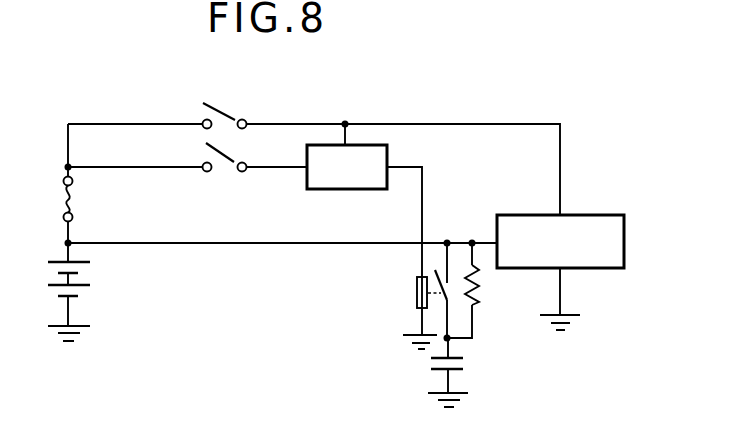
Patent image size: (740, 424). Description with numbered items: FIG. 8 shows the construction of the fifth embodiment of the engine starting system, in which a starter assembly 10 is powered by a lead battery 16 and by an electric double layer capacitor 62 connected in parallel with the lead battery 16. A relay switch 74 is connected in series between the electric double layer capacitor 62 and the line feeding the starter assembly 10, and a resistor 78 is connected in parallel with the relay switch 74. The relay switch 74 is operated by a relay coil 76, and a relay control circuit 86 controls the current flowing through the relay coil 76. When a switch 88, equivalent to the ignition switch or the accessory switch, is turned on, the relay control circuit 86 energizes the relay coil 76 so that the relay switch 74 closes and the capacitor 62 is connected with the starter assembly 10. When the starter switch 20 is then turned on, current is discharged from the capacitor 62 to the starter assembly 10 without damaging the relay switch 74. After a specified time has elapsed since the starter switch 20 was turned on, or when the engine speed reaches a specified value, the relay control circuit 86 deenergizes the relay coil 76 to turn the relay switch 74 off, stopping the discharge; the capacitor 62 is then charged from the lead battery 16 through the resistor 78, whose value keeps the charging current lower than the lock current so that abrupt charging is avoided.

The starter assembly 10 is at (592, 220).
The lead battery 16 is at (80, 280).
The starter switch 20 is at (223, 110).
The electric double layer capacitor 62 is at (428, 363).
The relay switch 74 is at (449, 293).
The relay coil 76 is at (417, 295).
The resistor 78 is at (478, 292).
The relay control circuit 86 is at (390, 157).
The switch 88 is at (232, 166).